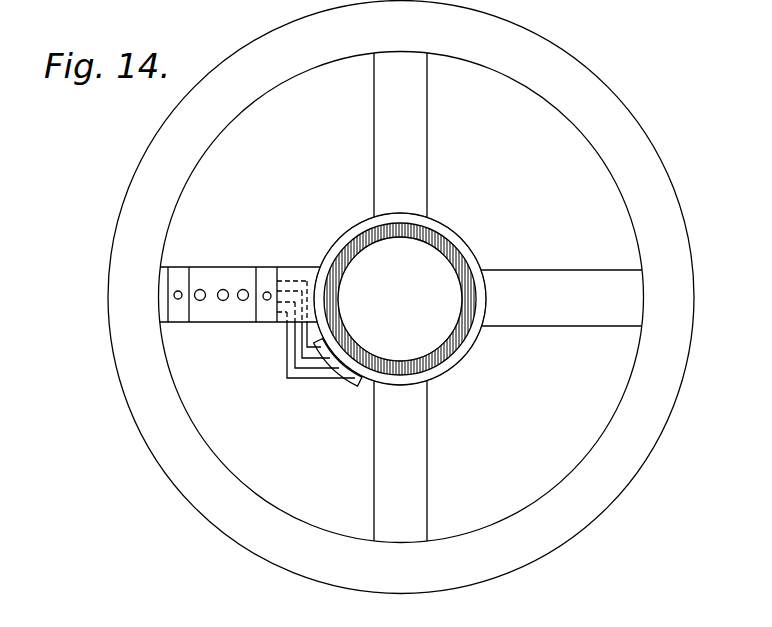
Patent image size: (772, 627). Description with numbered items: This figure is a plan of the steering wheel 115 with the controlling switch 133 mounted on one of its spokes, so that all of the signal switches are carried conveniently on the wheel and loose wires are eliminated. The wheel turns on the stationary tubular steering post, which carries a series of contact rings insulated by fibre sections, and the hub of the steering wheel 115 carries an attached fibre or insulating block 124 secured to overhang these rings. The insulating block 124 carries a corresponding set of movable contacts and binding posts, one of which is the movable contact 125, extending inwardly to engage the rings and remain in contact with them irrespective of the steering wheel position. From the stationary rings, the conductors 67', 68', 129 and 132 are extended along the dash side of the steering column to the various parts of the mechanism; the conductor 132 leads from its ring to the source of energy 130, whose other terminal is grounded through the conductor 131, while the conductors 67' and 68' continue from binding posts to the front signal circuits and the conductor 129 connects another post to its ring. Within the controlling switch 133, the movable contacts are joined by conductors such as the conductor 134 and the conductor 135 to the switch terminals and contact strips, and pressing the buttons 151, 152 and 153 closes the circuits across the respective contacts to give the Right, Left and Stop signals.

The steering wheel 115 is at (543, 530).
The movable contact and binding post 125 is at (471, 349).
The fibre or insulating block 124 is at (360, 380).
The conductor 129 is at (481, 266).
The conductor 67' is at (449, 280).
The conductor 68' is at (431, 271).
The conductor 132 is at (451, 228).
The controlling switch 133 is at (240, 265).
The button 151 is at (200, 301).
The button 152 is at (223, 301).
The button 153 is at (244, 301).
The conductor 131 is at (288, 378).
The source of energy 130 is at (297, 376).
The conductor 135 is at (311, 361).
The conductor 134 is at (331, 375).